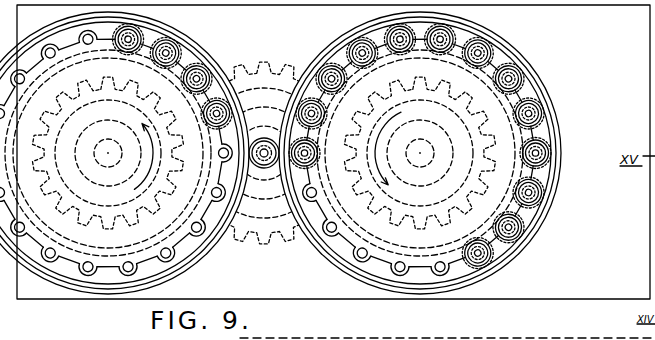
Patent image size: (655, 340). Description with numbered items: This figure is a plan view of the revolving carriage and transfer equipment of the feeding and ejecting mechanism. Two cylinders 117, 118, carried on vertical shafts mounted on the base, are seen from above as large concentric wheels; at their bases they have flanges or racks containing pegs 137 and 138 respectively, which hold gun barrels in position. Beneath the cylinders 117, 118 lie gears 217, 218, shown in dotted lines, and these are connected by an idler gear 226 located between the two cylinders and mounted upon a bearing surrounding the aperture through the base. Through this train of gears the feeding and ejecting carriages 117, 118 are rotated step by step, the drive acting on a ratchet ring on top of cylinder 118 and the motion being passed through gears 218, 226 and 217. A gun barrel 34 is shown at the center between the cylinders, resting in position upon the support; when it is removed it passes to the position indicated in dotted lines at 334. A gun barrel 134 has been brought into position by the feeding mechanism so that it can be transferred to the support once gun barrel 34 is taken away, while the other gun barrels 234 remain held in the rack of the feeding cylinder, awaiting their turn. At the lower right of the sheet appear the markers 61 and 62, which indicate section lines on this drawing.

The gun barrel 34 is at (264, 168).
The gun barrel 134 is at (322, 153).
The other gun barrels 234 is at (436, 147).
The dotted-line position of gun barrel 334 is at (173, 77).
The cylinder (feeding carriage) 117 is at (420, 153).
The cylinder (ejecting carriage) 118 is at (108, 153).
The gear 217 is at (420, 160).
The gear 218 is at (22, 67).
The pegs 137 is at (383, 225).
The pegs 138 is at (87, 80).
The idler gear 226 is at (270, 247).
The section line 61 is at (650, 306).
The section line 62 is at (651, 329).